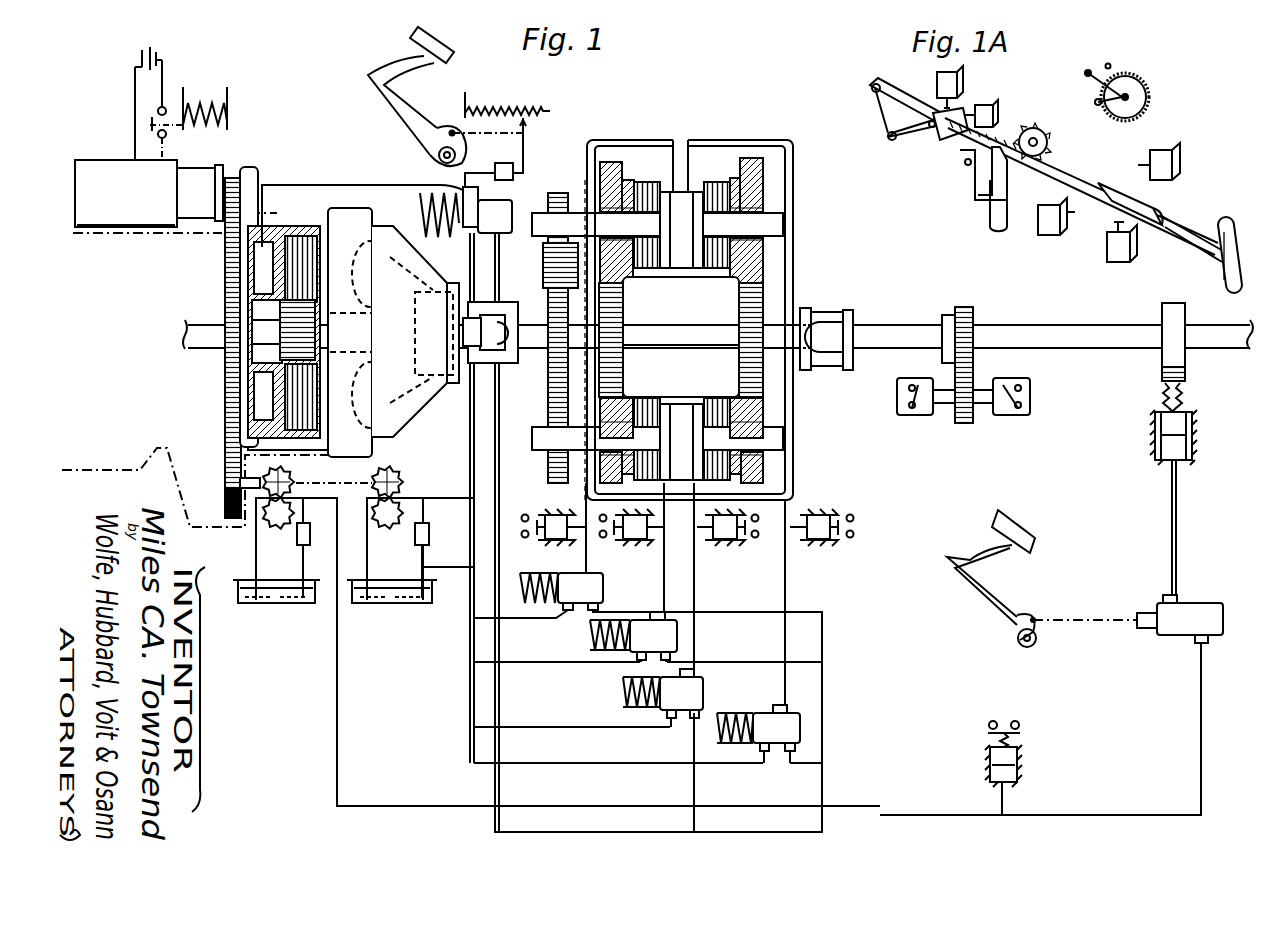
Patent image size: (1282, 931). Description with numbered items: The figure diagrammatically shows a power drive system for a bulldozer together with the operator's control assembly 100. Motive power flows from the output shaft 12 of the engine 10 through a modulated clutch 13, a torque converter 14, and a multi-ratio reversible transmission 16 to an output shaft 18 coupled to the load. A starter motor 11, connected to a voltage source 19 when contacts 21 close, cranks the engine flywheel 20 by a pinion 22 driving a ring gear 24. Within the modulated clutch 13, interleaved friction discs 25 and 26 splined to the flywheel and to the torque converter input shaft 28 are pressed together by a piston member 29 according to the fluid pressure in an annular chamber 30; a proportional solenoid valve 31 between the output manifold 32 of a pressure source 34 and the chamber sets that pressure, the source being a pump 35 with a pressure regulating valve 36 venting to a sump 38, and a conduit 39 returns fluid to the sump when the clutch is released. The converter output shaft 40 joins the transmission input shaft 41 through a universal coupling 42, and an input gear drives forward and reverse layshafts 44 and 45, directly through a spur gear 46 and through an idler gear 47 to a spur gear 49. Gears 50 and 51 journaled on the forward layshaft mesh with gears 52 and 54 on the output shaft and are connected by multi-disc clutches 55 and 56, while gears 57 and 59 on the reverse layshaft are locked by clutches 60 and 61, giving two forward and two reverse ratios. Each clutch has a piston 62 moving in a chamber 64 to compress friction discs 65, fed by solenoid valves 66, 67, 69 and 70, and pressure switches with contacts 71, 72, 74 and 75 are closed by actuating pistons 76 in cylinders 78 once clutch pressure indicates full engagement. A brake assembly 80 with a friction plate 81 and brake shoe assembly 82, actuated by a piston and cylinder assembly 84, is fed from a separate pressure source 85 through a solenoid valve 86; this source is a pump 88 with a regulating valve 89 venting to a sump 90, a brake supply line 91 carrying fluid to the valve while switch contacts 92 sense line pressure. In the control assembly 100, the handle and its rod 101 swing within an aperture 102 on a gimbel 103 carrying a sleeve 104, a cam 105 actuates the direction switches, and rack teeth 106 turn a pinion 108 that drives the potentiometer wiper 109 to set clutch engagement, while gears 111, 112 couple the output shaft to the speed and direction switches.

In FIG. 1, the engine 10 is at (142, 470).
In FIG. 1, the starter motor 11 is at (110, 162).
In FIG. 1, the output shaft 12 is at (205, 323).
In FIG. 1, the modulated clutch 13 is at (298, 229).
In FIG. 1, the torque converter 14 is at (405, 234).
In FIG. 1, the multi-ratio reversible transmission 16 is at (782, 268).
In FIG. 1, the output shaft 18 is at (1058, 323).
In FIG. 1, the voltage source 19 is at (159, 53).
In FIG. 1, the engine flywheel 20 is at (248, 268).
In FIG. 1, the contacts 21 is at (170, 132).
In FIG. 1, the pinion 22 is at (232, 180).
In FIG. 1, the ring gear 24 is at (225, 247).
In FIG. 1, the friction discs 25 is at (285, 392).
In FIG. 1, the friction discs 26 is at (307, 272).
In FIG. 1, the torque converter input shaft 28 is at (415, 331).
In FIG. 1, the piston member 29 is at (275, 417).
In FIG. 1, the annular chamber 30 is at (260, 437).
In FIG. 1, the proportional solenoid valve 31 is at (440, 225).
In FIG. 1, the output manifold 32 is at (475, 442).
In FIG. 1, the pressure source 34 is at (408, 474).
In FIG. 1, the pump 35 is at (393, 476).
In FIG. 1, the pressure regulating valve 36 is at (412, 540).
In FIG. 1, the sump 38 is at (378, 604).
In FIG. 1, the conduit 39 is at (451, 560).
In FIG. 1, the converter output shaft 40 is at (471, 302).
In FIG. 1, the transmission input shaft 41 is at (520, 331).
In FIG. 1, the universal coupling 42 is at (503, 307).
In FIG. 1, the forward layshaft 44 is at (783, 452).
In FIG. 1, the reverse layshaft 45 is at (783, 217).
In FIG. 1, the spur gear 46 is at (562, 402).
In FIG. 1, the idler gear 47 is at (543, 258).
In FIG. 1, the spur gear 49 is at (556, 190).
In FIG. 1, the gear 50 is at (600, 486).
In FIG. 1, the gear 51 is at (765, 487).
In FIG. 1, the gear 52 is at (622, 315).
In FIG. 1, the gear 54 is at (765, 378).
In FIG. 1, the multi-disc clutch 55 is at (645, 392).
In FIG. 1, the multi-disc clutch 56 is at (721, 392).
In FIG. 1, the gear 57 is at (620, 276).
In FIG. 1, the gear 59 is at (760, 280).
In FIG. 1, the clutch 60 is at (645, 176).
In FIG. 1, the clutch 61 is at (723, 176).
In FIG. 1, the piston 62 is at (678, 268).
In FIG. 1, the chamber 64 is at (690, 195).
In FIG. 1, the interleaved friction discs 65 is at (632, 197).
In FIG. 1, the solenoid valve 66 is at (703, 686).
In FIG. 1, the solenoid valve 67 is at (677, 636).
In FIG. 1, the solenoid valve 69 is at (800, 730).
In FIG. 1, the solenoid valve 70 is at (595, 592).
In FIG. 1, the contacts 71 is at (760, 538).
In FIG. 1, the contacts 72 is at (606, 528).
In FIG. 1, the contacts 74 is at (865, 529).
In FIG. 1, the contacts 75 is at (519, 532).
In FIG. 1, the actuating piston 76 is at (830, 522).
In FIG. 1, the cylinder 78 is at (812, 540).
In FIG. 1, the brake assembly 80 is at (1141, 398).
In FIG. 1, the friction plate 81 is at (1185, 376).
In FIG. 1, the brake shoe assembly 82 is at (1185, 390).
In FIG. 1, the piston and cylinder assembly 84 is at (1200, 444).
In FIG. 1, the pressure source 85 is at (261, 543).
In FIG. 1, the solenoid valve 86 is at (1210, 600).
In FIG. 1, the pump 88 is at (286, 482).
In FIG. 1, the pressure regulating valve 89 is at (297, 540).
In FIG. 1, the sump 90 is at (270, 600).
In FIG. 1, the brake supply line 91 is at (332, 643).
In FIG. 1, the contacts 92 is at (1010, 718).
In FIG. 1A, the control assembly 100 is at (894, 61).
In FIG. 1A, the rod 101 is at (1200, 220).
In FIG. 1A, the aperture 102 is at (1125, 185).
In FIG. 1A, the gimbel 103 is at (965, 195).
In FIG. 1A, the sleeve 104 is at (1060, 160).
In FIG. 1A, the cam 105 is at (948, 140).
In FIG. 1A, the rack teeth 106 is at (960, 135).
In FIG. 1A, the pinion 108 is at (1040, 128).
In FIG. 1A, the wiper 109 is at (1147, 100).
In FIG. 1, the gear 111 is at (973, 316).
In FIG. 1, the gear 112 is at (973, 372).